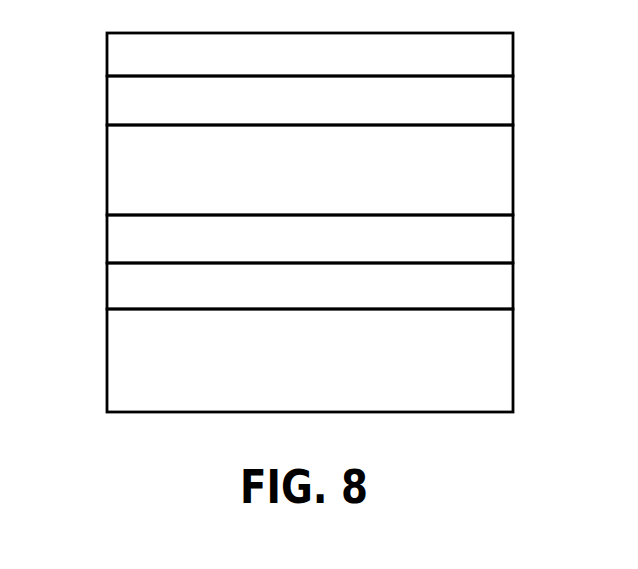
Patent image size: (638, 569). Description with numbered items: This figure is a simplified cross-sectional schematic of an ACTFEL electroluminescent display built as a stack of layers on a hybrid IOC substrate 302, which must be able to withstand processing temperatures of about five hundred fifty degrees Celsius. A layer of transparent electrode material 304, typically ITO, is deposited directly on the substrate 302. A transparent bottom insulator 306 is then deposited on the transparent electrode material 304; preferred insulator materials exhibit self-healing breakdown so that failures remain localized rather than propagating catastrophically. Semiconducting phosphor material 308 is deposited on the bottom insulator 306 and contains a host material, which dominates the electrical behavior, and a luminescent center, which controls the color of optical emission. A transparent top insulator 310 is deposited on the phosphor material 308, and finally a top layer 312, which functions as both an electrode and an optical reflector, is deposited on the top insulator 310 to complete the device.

The hybrid IOC substrate 302 is at (513, 359).
The transparent electrode material 304 is at (107, 290).
The transparent bottom insulator 306 is at (513, 242).
The semiconducting phosphor material 308 is at (107, 173).
The transparent top insulator 310 is at (513, 99).
The top layer 312 is at (107, 53).